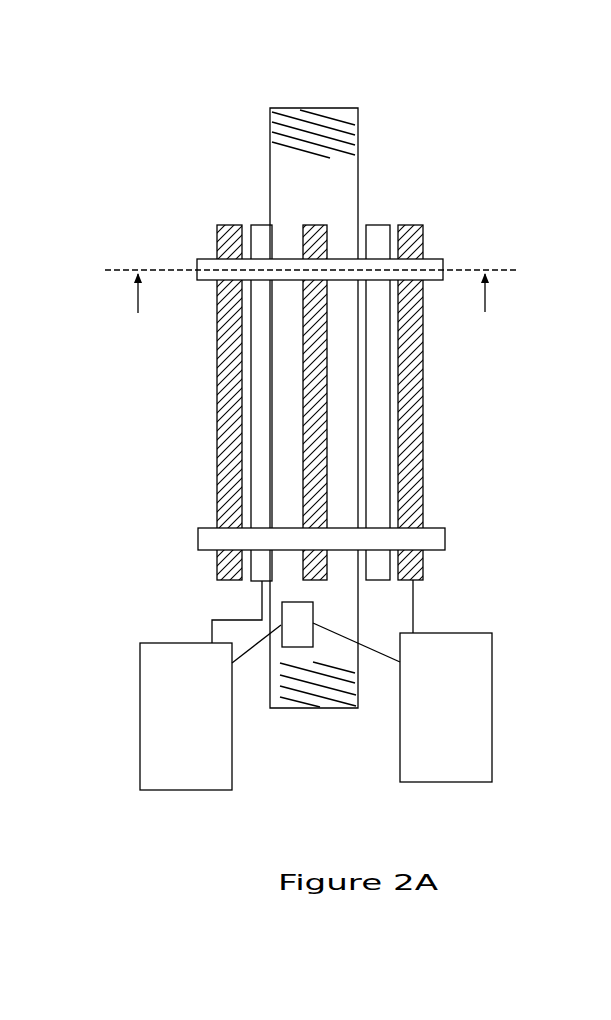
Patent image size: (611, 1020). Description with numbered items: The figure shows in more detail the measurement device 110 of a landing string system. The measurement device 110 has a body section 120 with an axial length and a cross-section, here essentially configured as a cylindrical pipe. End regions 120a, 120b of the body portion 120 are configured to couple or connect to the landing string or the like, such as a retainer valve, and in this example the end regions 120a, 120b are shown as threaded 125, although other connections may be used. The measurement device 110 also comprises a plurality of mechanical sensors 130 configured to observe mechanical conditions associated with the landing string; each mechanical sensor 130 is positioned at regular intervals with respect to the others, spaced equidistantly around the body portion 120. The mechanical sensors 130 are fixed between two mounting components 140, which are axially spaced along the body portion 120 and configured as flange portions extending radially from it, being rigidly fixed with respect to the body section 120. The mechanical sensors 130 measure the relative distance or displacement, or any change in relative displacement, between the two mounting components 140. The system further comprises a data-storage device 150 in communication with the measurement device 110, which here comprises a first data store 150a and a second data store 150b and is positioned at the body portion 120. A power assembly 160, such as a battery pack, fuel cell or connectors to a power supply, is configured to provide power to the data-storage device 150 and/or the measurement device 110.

The measurement device 110 is at (193, 195).
The body section 120 is at (338, 207).
The end region 120a is at (253, 113).
The end region 120b is at (335, 733).
The thread 125 is at (357, 138).
The mechanical sensors 130 is at (217, 337).
The mounting components 140 is at (443, 259).
The data-storage device 150 is at (108, 810).
The first data store 150a is at (217, 722).
The second data store 150b is at (476, 721).
The power assembly 160 is at (293, 618).